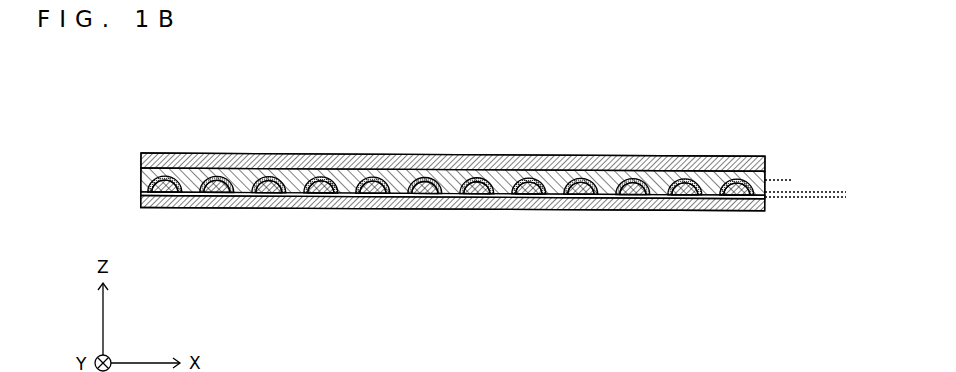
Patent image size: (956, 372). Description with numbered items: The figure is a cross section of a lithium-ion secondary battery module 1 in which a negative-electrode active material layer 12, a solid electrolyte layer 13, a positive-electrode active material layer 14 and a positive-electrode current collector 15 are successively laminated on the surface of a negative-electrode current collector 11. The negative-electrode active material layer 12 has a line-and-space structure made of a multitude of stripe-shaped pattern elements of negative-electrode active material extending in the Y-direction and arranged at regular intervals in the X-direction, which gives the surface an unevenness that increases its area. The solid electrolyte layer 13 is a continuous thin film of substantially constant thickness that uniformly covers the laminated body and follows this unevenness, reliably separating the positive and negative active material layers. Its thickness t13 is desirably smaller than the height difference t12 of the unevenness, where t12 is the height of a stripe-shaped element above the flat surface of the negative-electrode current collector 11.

The lithium-ion secondary battery module 1 is at (413, 188).
The negative-electrode current collector 11 is at (335, 208).
The negative-electrode active material layer 12 is at (633, 175).
The solid electrolyte layer 13 is at (141, 193).
The positive-electrode active material layer 14 is at (141, 181).
The positive-electrode current collector 15 is at (470, 161).
The height difference of the unevenness t12 is at (785, 151).
The thickness of the solid electrolyte layer t13 is at (835, 170).